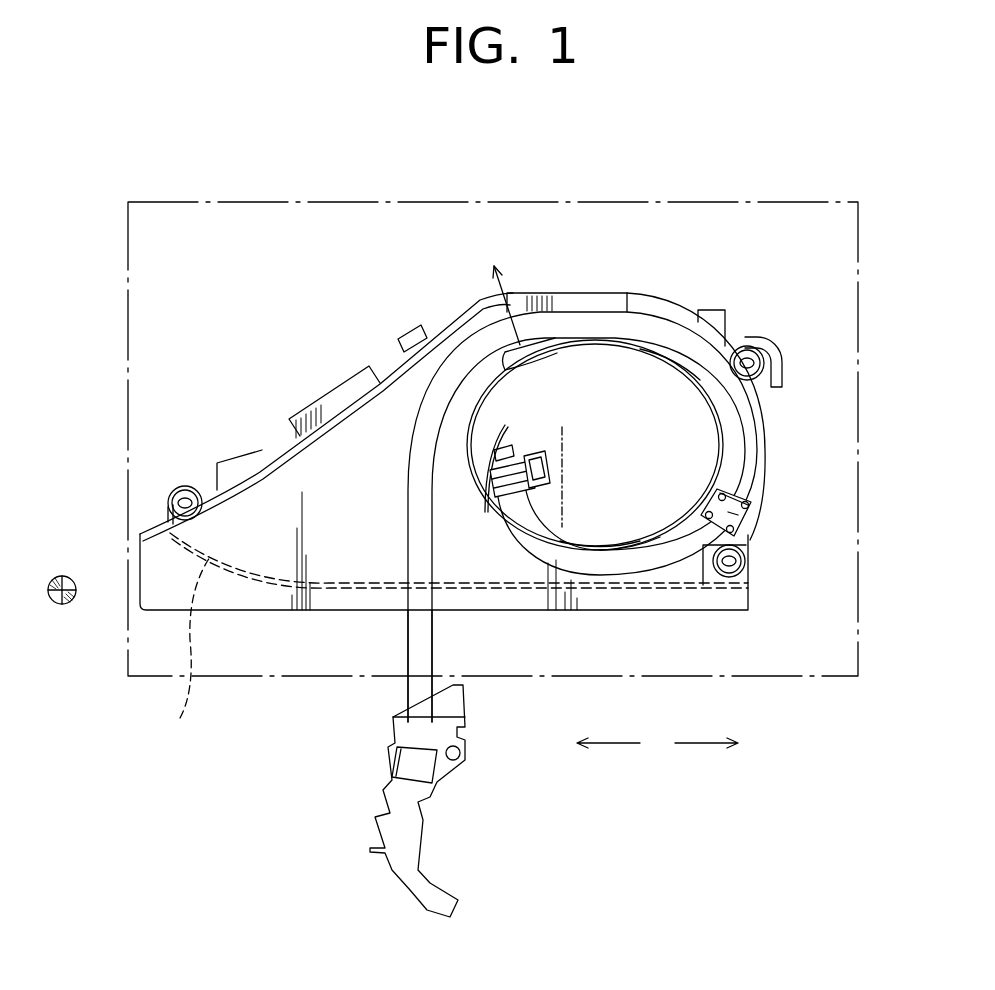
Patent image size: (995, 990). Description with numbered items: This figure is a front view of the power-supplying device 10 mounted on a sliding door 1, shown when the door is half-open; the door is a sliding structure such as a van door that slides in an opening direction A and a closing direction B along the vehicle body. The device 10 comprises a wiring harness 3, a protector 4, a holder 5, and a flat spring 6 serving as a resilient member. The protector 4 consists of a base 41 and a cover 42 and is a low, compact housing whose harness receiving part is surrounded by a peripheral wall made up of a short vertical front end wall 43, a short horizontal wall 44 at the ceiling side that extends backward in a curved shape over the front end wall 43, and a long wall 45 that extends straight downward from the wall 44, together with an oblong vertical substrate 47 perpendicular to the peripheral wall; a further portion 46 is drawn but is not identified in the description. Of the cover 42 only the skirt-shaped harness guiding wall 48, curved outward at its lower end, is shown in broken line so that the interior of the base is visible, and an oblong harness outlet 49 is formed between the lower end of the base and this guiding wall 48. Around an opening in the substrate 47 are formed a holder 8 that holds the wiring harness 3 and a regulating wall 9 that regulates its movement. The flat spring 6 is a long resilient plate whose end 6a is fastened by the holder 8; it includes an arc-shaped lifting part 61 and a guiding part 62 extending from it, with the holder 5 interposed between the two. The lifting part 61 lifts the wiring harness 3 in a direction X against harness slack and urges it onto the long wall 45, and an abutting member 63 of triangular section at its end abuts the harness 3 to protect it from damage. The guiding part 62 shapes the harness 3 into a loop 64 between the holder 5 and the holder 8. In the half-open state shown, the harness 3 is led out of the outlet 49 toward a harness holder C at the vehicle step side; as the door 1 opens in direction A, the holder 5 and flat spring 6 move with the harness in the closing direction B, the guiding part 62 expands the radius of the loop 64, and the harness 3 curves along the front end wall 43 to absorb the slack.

The sliding door 1 is at (347, 235).
The power-supplying device 10 is at (575, 283).
The wiring harness 3 is at (668, 332).
The protector 4 is at (342, 740).
The base 41 is at (288, 545).
The cover 42 is at (332, 592).
The front end wall 43 is at (765, 447).
The horizontal wall 44 is at (595, 312).
The long wall 45 is at (395, 357).
The mounting ear 46 is at (155, 522).
The vertical substrate 47 is at (515, 557).
The harness guiding wall 48 is at (187, 650).
The harness outlet 49 is at (490, 613).
The holder 5 is at (752, 522).
The flat spring 6 is at (712, 425).
The end of the flat spring 6a is at (535, 453).
The lifting part 61 is at (672, 373).
The guiding part 62 is at (633, 543).
The abutting member 63 is at (527, 370).
The loop 64 is at (600, 538).
The holder 8 is at (547, 462).
The regulating wall 9 is at (490, 447).
The direction X is at (497, 283).
The opening direction A is at (610, 744).
The closing direction B is at (700, 744).
The harness holder C is at (62, 576).